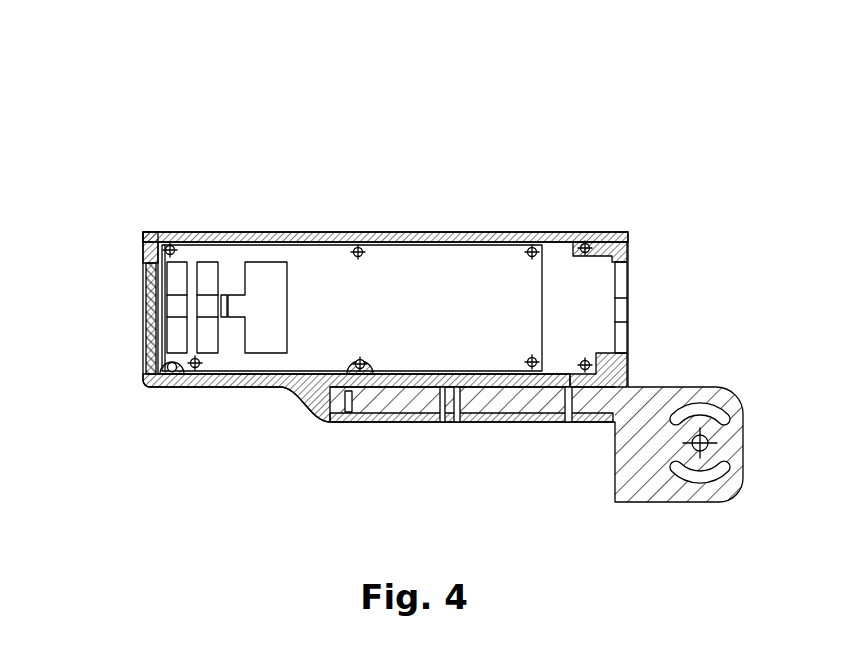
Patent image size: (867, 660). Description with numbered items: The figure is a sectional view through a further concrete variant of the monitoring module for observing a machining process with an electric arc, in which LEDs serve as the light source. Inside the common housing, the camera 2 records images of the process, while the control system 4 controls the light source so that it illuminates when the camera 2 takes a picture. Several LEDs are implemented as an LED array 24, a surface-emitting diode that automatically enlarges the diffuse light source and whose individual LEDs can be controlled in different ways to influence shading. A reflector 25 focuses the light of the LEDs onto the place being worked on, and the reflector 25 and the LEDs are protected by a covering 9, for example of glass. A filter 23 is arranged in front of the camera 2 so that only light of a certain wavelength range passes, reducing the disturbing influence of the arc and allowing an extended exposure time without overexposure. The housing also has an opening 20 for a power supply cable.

The camera 2 is at (260, 272).
The control system 4 is at (434, 323).
The covering 9 is at (143, 295).
The opening for a power supply cable 20 is at (622, 310).
The filter 23 is at (223, 317).
The LED array 24 is at (178, 272).
The reflector 25 is at (207, 270).